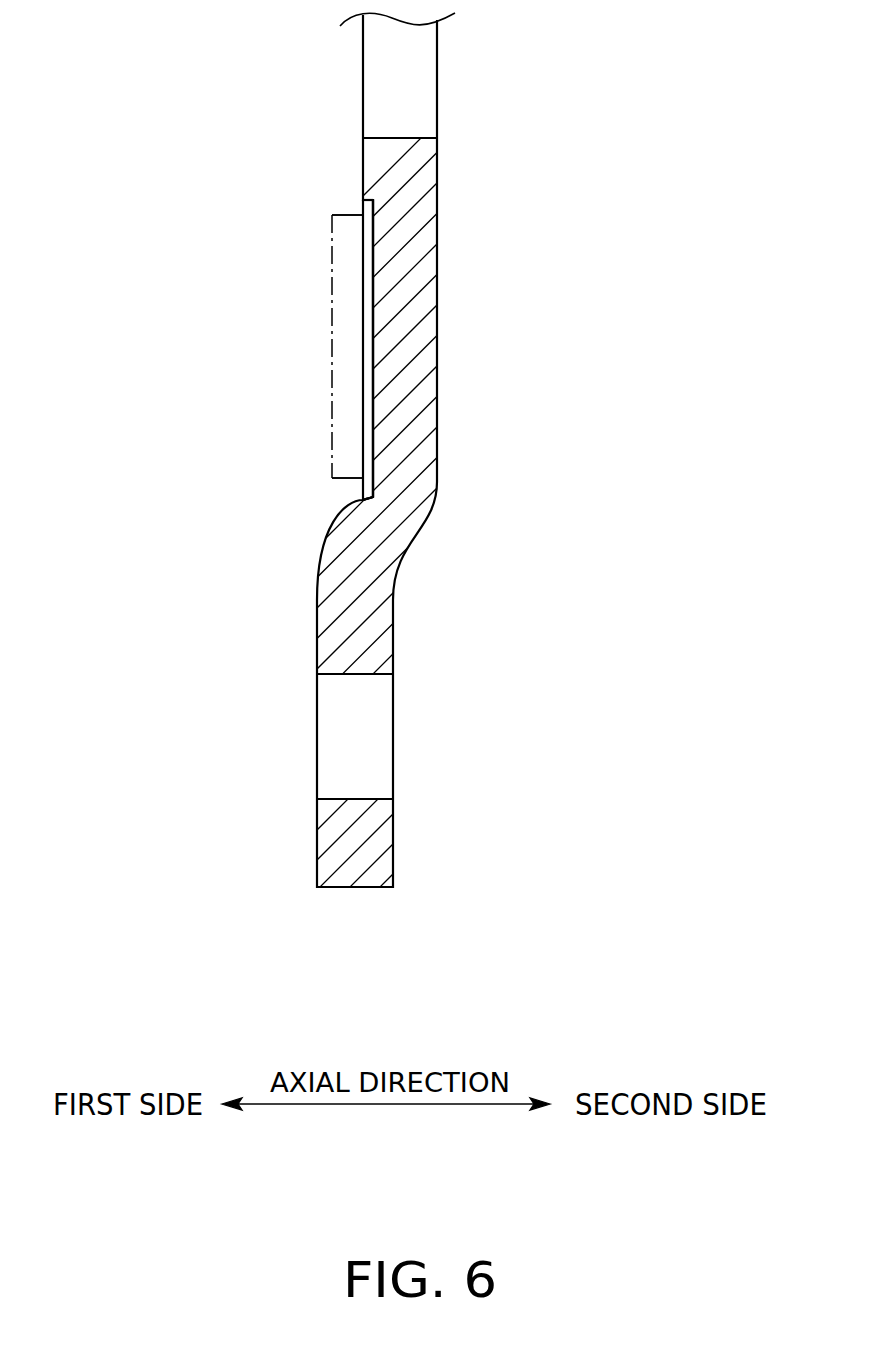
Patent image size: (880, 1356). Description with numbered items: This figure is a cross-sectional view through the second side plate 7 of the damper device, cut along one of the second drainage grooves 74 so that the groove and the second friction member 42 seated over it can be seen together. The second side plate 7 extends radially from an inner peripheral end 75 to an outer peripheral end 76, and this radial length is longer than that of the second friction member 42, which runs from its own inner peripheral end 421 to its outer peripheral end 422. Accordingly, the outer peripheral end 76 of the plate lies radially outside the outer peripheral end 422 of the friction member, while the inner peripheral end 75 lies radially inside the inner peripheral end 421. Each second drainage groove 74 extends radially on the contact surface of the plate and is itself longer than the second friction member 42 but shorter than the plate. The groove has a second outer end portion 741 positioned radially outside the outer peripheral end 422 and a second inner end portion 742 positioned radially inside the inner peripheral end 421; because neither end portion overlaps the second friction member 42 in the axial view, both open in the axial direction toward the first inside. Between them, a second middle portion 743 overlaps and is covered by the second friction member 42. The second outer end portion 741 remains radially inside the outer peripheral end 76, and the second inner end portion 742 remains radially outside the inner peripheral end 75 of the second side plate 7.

The second side plate 7 is at (354, 889).
The second drainage groove 74 is at (373, 363).
The second outer end portion 741 is at (362, 490).
The second inner end portion 742 is at (360, 204).
The second middle portion 743 is at (372, 336).
The inner peripheral end 75 is at (390, 137).
The outer peripheral end 76 is at (332, 888).
The second friction member 42 is at (332, 300).
The inner peripheral end 421 is at (333, 214).
The outer peripheral end 422 is at (333, 481).